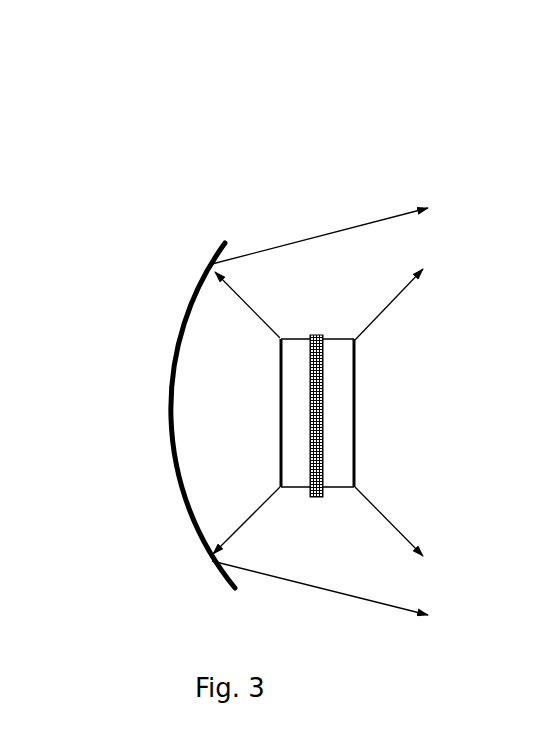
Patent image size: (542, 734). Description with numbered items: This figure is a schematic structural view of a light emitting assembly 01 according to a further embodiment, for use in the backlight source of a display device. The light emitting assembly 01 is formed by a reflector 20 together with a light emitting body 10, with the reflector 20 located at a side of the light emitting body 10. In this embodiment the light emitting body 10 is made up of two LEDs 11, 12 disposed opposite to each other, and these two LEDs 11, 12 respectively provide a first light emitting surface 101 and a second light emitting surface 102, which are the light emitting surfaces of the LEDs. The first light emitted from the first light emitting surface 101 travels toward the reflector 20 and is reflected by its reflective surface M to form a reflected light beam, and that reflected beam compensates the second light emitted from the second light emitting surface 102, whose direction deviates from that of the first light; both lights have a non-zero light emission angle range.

The light emitting assembly 01 is at (68, 74).
The light emitting body 10 is at (314, 318).
The LED 11 is at (288, 345).
The LED 12 is at (333, 345).
The first light emitting surface 101 is at (280, 421).
The second light emitting surface 102 is at (355, 420).
The reflective surface M is at (174, 400).
The reflector 20 is at (198, 551).